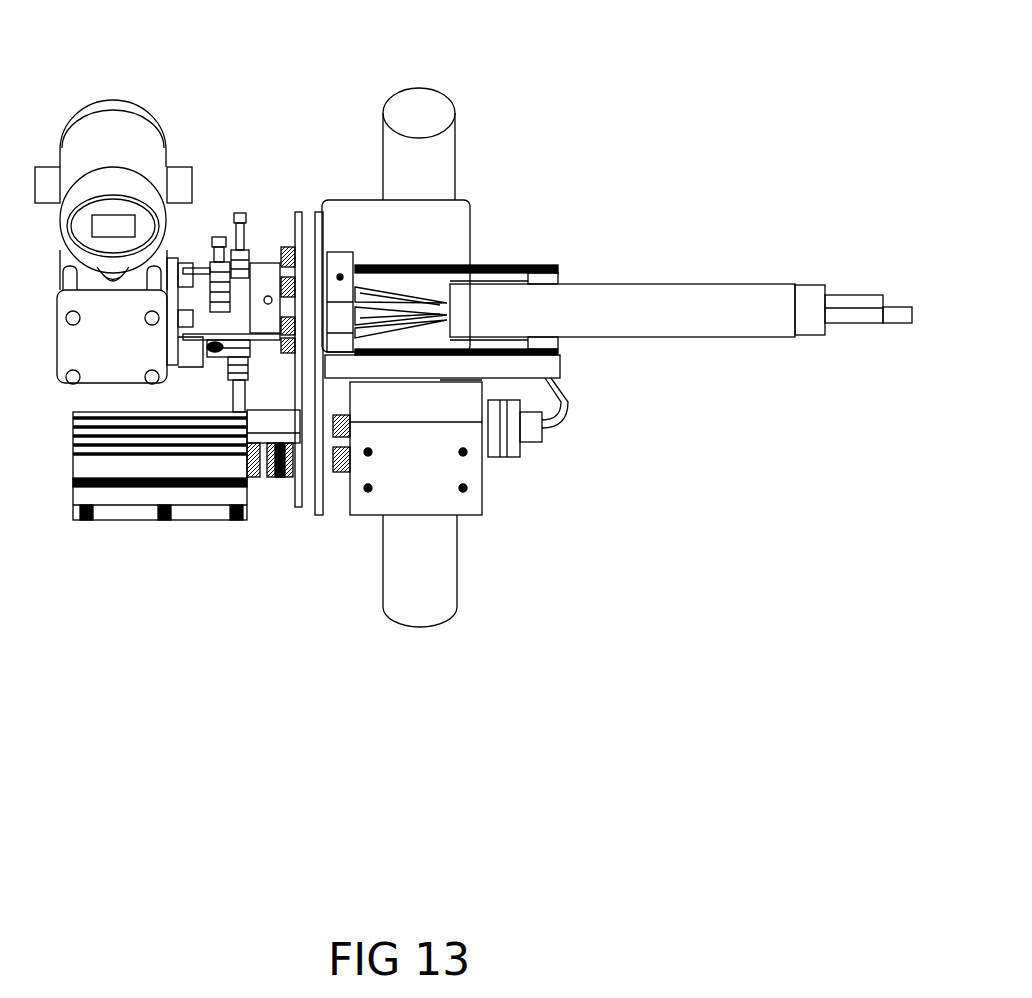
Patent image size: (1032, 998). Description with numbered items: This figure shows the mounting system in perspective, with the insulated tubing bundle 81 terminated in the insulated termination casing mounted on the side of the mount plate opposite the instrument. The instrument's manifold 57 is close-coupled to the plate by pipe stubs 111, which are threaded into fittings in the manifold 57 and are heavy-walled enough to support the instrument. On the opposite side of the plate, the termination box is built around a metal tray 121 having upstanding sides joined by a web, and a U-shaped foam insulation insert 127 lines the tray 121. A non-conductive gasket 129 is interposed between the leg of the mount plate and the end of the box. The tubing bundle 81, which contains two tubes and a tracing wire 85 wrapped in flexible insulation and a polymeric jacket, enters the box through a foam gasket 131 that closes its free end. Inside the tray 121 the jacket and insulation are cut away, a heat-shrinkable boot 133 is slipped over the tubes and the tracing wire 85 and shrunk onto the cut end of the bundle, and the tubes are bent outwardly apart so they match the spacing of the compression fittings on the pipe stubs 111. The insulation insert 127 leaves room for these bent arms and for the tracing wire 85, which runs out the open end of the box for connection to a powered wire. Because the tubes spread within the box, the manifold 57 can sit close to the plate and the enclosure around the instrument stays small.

The manifold 57 is at (148, 213).
The pipe stubs 111 is at (267, 341).
The non-conductive gasket 129 is at (375, 182).
The heat-shrinkable boot 133 is at (458, 212).
The U-shaped foam insulation insert 127 is at (473, 261).
The foam gasket 131 is at (594, 277).
The tubing bundle 81 is at (760, 282).
The tray 121 is at (560, 374).
The tracing wire 85 is at (565, 435).